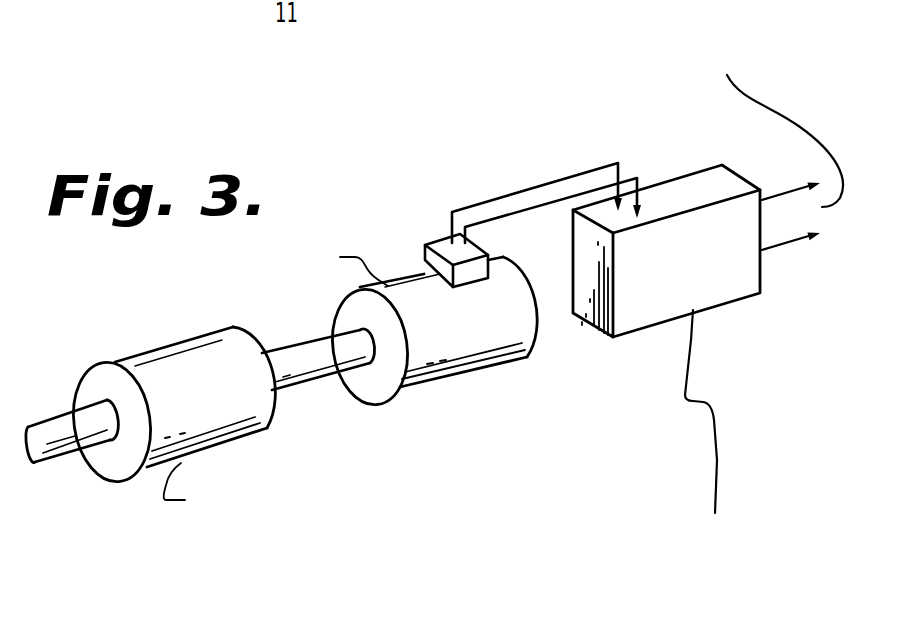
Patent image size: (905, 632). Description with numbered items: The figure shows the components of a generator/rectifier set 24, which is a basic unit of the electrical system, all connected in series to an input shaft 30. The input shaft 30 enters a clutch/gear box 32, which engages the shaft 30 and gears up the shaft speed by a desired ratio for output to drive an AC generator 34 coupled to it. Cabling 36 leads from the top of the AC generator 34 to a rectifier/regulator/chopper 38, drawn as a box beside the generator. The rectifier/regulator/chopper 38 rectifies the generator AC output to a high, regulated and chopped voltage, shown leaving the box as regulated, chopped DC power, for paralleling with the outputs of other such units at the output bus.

The generator/rectifier set 24 is at (553, 420).
The input shaft 30 is at (60, 422).
The clutch/gear box 32 is at (212, 420).
The AC generator 34 is at (477, 340).
The cabling 36 is at (513, 180).
The rectifier/regulator/chopper 38 is at (700, 267).